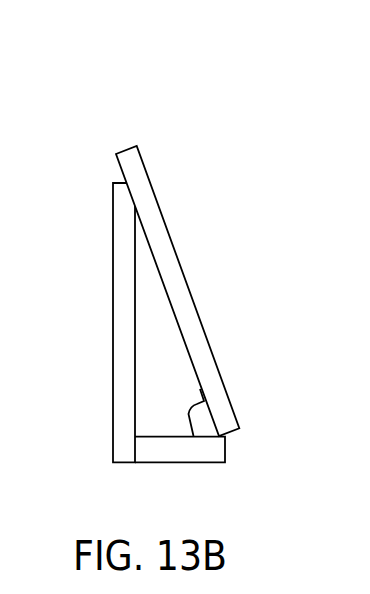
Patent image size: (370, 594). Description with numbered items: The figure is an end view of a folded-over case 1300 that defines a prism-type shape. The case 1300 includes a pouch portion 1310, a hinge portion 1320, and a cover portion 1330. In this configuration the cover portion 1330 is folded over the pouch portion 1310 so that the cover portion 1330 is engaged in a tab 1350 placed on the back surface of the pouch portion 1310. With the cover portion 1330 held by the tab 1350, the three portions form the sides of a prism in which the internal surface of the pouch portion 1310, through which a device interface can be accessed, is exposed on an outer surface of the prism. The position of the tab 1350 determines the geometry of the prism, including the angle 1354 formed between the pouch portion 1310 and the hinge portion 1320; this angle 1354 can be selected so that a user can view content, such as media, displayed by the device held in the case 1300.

The case 1300 is at (189, 98).
The pouch portion 1310 is at (155, 208).
The hinge portion 1320 is at (182, 463).
The cover portion 1330 is at (119, 373).
The tab 1350 is at (124, 183).
The angle 1354 is at (204, 401).